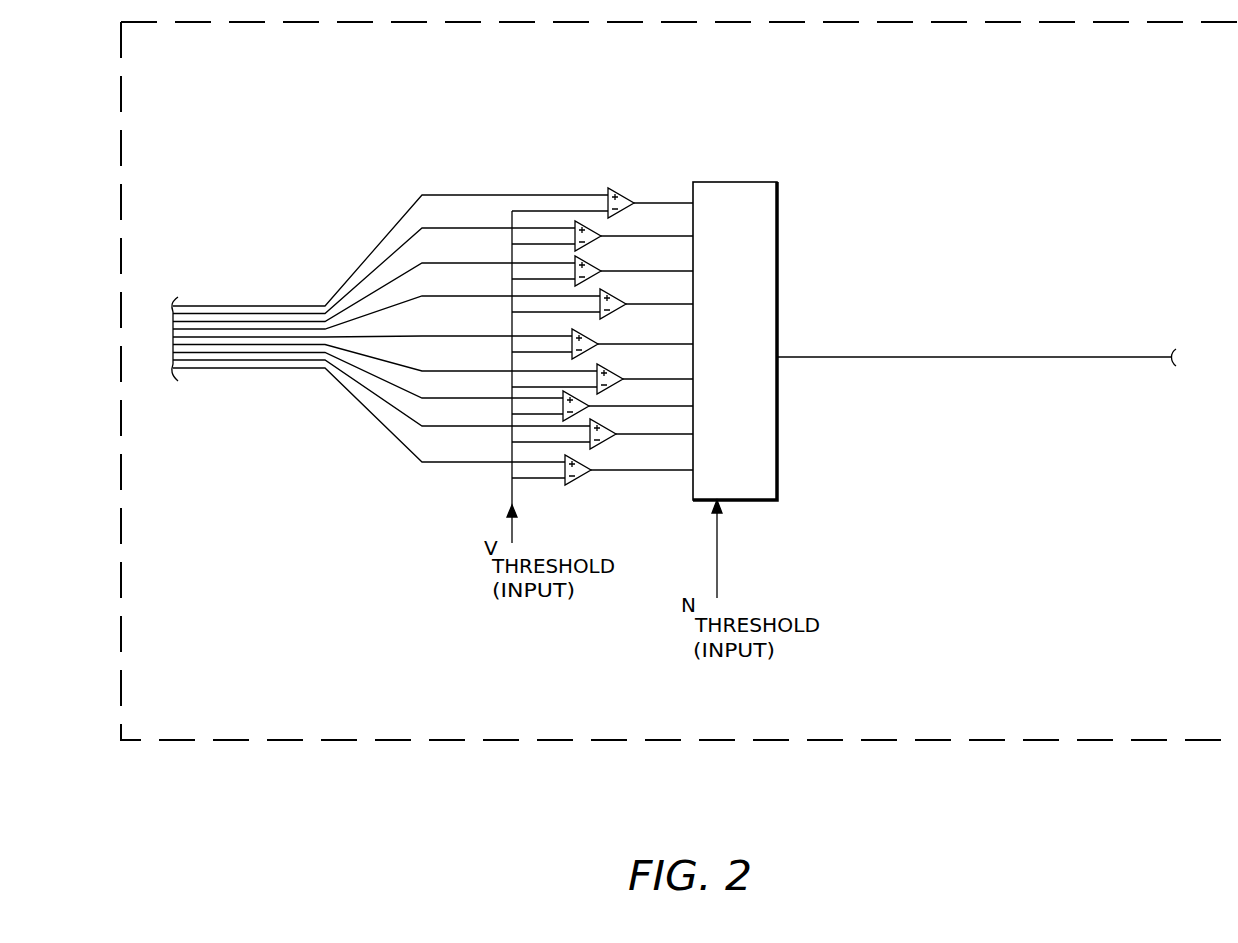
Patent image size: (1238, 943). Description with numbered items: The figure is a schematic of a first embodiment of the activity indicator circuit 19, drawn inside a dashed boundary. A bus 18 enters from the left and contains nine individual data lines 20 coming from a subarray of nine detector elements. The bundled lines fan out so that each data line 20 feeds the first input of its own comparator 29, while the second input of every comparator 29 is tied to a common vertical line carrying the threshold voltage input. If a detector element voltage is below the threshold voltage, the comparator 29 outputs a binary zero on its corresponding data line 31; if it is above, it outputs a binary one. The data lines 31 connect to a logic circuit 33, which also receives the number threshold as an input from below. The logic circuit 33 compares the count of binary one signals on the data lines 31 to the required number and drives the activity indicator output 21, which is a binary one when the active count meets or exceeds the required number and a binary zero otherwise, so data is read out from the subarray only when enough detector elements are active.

The bus 18 is at (254, 305).
The activity indicator circuit 19 is at (1168, 722).
The data lines 20 is at (243, 370).
The activity indicator output 21 is at (908, 359).
The comparator 29 is at (573, 220).
The data lines 31 is at (652, 271).
The logic circuit 33 is at (749, 321).